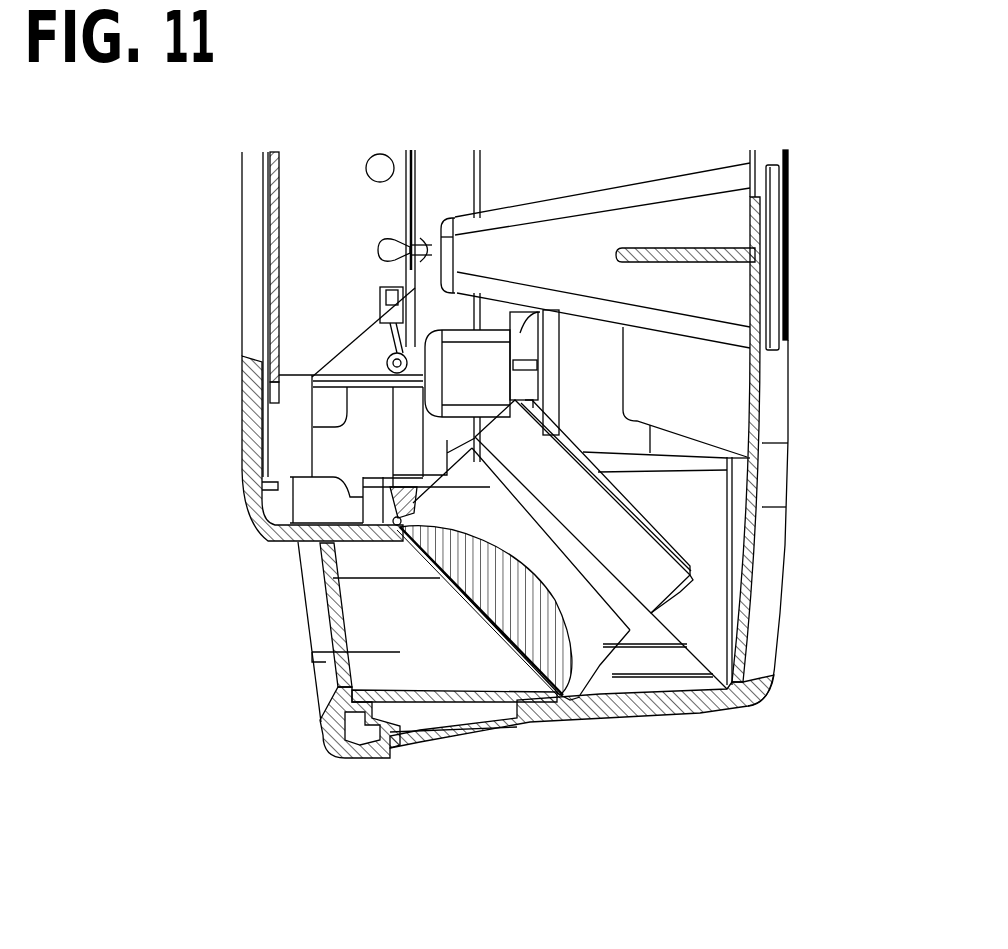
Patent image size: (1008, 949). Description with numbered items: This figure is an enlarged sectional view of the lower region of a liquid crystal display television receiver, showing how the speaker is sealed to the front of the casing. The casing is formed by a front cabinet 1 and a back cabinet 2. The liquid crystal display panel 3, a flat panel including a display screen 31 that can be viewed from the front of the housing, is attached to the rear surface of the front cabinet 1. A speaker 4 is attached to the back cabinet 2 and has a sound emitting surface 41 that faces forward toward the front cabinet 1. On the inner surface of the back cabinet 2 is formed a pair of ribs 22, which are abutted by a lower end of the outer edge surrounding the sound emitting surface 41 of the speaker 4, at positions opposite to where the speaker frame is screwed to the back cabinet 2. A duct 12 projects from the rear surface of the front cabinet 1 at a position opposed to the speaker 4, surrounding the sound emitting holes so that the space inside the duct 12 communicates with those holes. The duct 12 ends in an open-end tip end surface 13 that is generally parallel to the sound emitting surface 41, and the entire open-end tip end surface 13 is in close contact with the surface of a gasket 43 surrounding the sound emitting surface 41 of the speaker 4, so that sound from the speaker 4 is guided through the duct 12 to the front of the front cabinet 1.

The front cabinet 1 is at (250, 530).
The back cabinet 2 is at (786, 548).
The liquid crystal display panel 3 is at (303, 277).
The display screen 31 is at (267, 228).
The speaker 4 is at (480, 593).
The sound emitting surface 41 is at (480, 613).
The gasket 43 is at (413, 517).
The duct 12 is at (432, 695).
The open-end tip end surface 13 is at (405, 532).
The ribs 22 is at (530, 707).